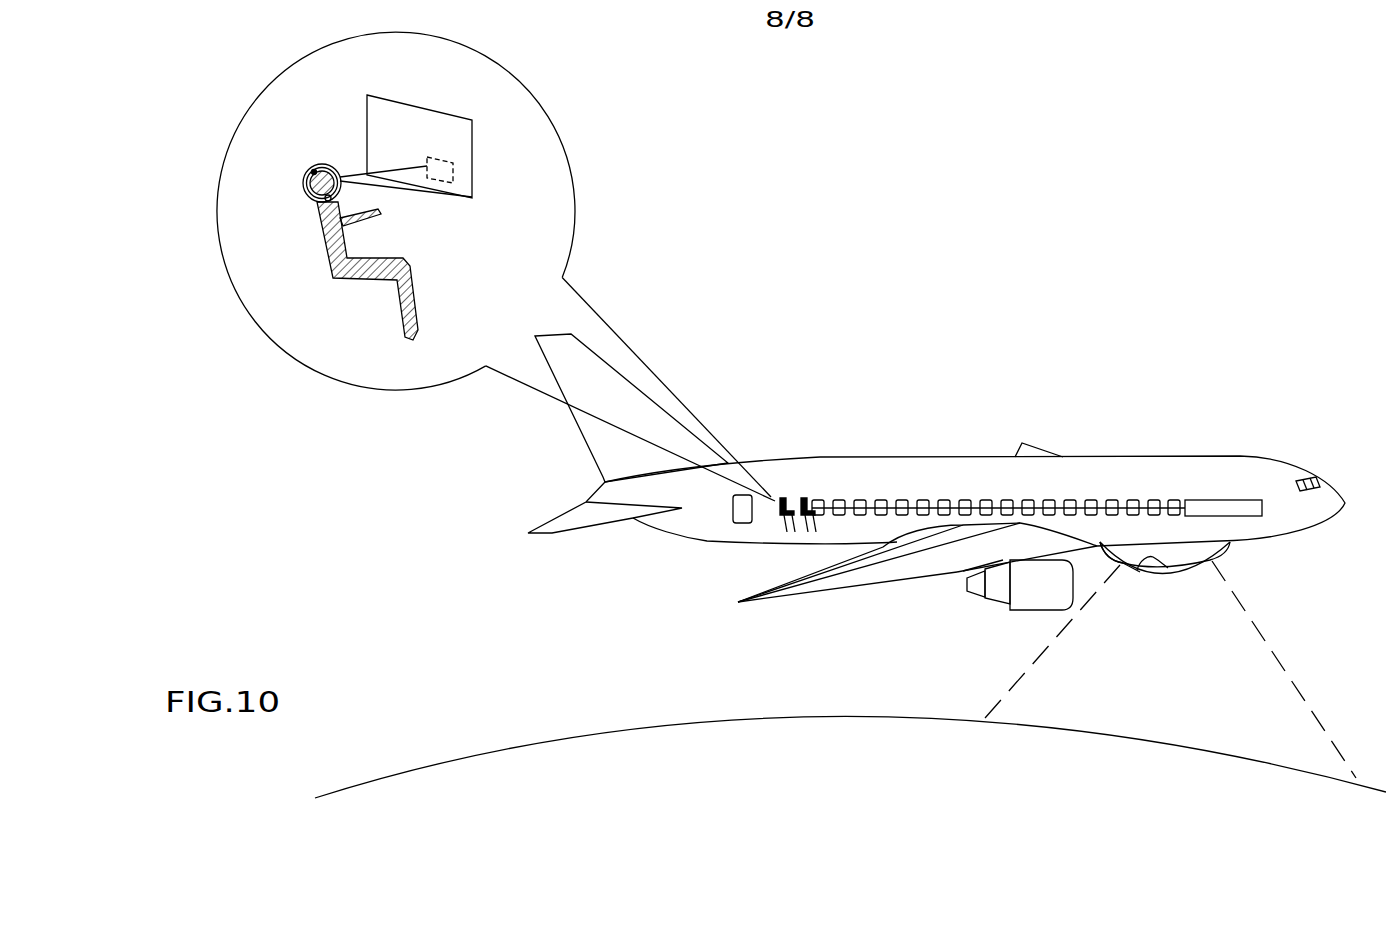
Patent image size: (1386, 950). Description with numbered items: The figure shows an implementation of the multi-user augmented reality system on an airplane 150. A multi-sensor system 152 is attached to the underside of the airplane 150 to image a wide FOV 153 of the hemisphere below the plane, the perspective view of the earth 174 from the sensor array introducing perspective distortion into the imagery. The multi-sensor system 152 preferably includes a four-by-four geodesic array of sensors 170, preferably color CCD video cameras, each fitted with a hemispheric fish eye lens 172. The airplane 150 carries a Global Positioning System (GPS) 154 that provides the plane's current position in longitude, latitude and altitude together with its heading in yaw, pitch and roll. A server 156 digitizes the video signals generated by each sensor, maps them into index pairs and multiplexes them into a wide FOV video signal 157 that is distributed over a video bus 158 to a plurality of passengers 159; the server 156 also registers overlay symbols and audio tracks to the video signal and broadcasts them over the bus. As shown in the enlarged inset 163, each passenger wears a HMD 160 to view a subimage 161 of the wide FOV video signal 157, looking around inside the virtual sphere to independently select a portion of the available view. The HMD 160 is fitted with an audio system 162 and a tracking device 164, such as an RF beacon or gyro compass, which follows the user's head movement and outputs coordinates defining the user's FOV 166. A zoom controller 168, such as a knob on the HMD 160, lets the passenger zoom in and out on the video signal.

The airplane 150 is at (893, 582).
The multi-sensor system 152 is at (1247, 566).
The wide FOV 153 is at (1295, 682).
The Global Positioning System (GPS) 154 is at (1033, 447).
The server 156 is at (1218, 505).
The wide FOV video signal 157 is at (458, 127).
The video bus 158 is at (897, 500).
The passengers 159 is at (788, 524).
The HMD 160 is at (303, 184).
The subimage 161 is at (453, 172).
The audio system 162 is at (307, 195).
The enlarged inset 163 is at (588, 180).
The tracking device 164 is at (312, 167).
The user's FOV 166 is at (415, 179).
The zoom controller 168 is at (337, 199).
The sensors 170 is at (1168, 568).
The fish eye lens 172 is at (1140, 572).
The earth 174 is at (548, 738).